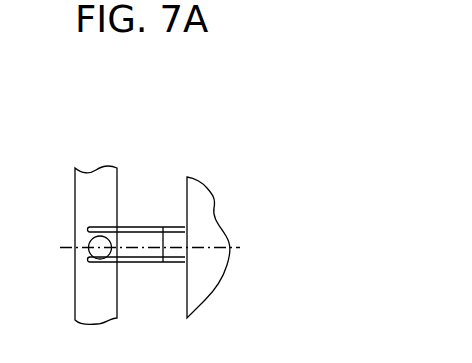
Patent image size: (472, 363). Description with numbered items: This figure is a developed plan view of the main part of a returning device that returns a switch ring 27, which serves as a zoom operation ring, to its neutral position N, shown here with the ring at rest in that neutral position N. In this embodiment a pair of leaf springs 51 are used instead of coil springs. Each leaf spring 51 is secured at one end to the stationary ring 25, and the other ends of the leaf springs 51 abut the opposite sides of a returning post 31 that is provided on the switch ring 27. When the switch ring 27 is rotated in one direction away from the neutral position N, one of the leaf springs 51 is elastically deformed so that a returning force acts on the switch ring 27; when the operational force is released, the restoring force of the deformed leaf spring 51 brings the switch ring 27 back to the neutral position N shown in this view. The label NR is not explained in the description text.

The switch ring 27 is at (88, 302).
The stationary ring 25 is at (208, 278).
The leaf springs 51 is at (163, 227).
The returning post 31 is at (86, 236).
The neutral position N is at (135, 244).
The rod assembly NR is at (158, 128).